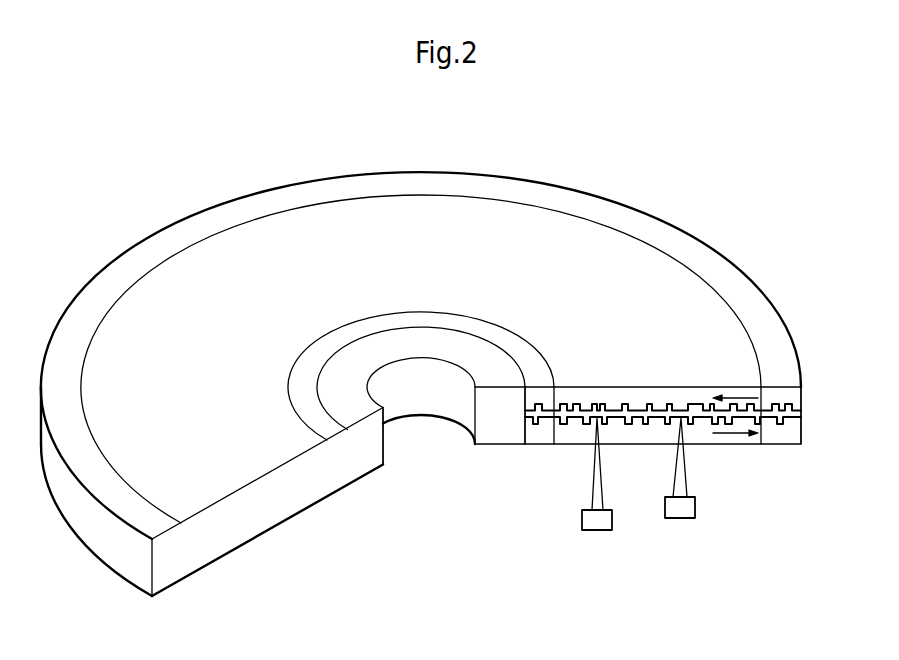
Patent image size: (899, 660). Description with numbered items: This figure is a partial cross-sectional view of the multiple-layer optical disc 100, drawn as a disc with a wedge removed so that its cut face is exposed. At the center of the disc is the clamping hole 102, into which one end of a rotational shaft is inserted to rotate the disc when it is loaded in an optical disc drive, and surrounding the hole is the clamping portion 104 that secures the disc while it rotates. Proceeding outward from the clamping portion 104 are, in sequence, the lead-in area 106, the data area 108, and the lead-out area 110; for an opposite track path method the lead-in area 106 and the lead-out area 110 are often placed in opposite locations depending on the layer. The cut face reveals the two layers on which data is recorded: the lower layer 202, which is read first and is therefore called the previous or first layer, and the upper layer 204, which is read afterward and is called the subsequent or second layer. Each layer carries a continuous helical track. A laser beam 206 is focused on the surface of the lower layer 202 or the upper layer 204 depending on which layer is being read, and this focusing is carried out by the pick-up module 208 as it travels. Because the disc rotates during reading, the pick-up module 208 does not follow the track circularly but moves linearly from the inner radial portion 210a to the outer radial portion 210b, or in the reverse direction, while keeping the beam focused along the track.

The multiple-layer optical disc 100 is at (523, 168).
The clamping hole 102 is at (426, 372).
The clamping portion 104 is at (482, 355).
The lead-in area 106 is at (527, 352).
The data area 108 is at (648, 303).
The lead-out area 110 is at (745, 276).
The lower layer 202 is at (801, 424).
The upper layer 204 is at (801, 403).
The laser beam 206 is at (603, 480).
The pick-up module 208 is at (597, 530).
The inner radial portion 210a is at (524, 449).
The outer radial portion 210b is at (802, 449).